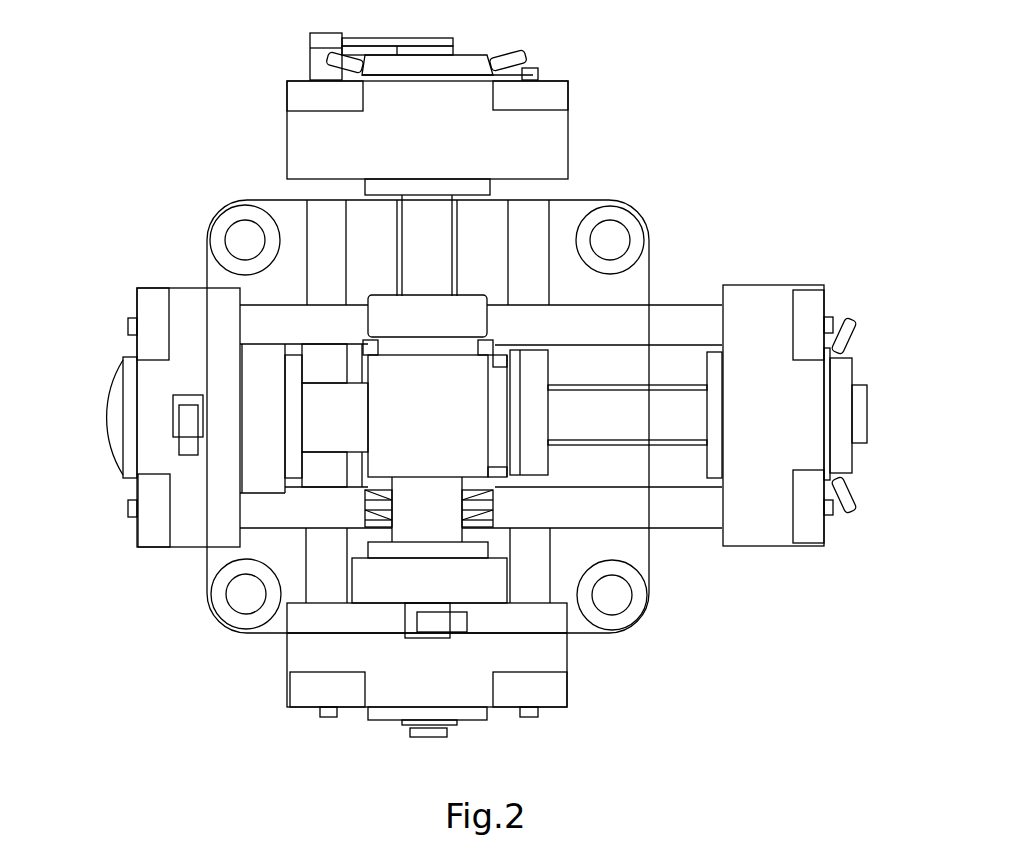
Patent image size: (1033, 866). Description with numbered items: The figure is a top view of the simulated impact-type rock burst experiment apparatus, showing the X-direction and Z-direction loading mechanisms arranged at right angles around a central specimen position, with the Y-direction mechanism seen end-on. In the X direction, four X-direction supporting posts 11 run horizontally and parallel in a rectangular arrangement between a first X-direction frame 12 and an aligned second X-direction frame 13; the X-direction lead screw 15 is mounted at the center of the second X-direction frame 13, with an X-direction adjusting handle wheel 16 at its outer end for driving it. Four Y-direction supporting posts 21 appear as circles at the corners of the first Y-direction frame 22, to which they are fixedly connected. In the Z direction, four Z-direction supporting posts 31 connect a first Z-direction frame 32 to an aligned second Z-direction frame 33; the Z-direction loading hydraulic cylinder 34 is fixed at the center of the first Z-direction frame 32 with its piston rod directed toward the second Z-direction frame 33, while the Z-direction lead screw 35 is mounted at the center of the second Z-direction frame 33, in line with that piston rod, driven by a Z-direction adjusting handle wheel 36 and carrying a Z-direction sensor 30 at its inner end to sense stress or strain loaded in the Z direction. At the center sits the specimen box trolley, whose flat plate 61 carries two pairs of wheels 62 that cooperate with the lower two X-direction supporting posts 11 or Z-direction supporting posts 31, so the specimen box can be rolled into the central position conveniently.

The X-direction supporting post 11 is at (672, 323).
The first X-direction frame 12 is at (157, 405).
The second X-direction frame 13 is at (780, 392).
The X-direction lead screw 15 is at (672, 417).
The X-direction adjusting handle wheel 16 is at (838, 430).
The Y-direction supporting post 21 is at (243, 238).
The first Y-direction frame 22 is at (215, 272).
The Z-direction sensor 30 is at (430, 322).
The Z-direction supporting post 31 is at (325, 188).
The first Z-direction frame 32 is at (440, 673).
The second Z-direction frame 33 is at (325, 125).
The Z-direction loading hydraulic cylinder 34 is at (438, 572).
The Z-direction lead screw 35 is at (433, 273).
The Z-direction adjusting handle wheel 36 is at (442, 68).
The flat plate 61 is at (497, 488).
The wheels 62 is at (367, 525).